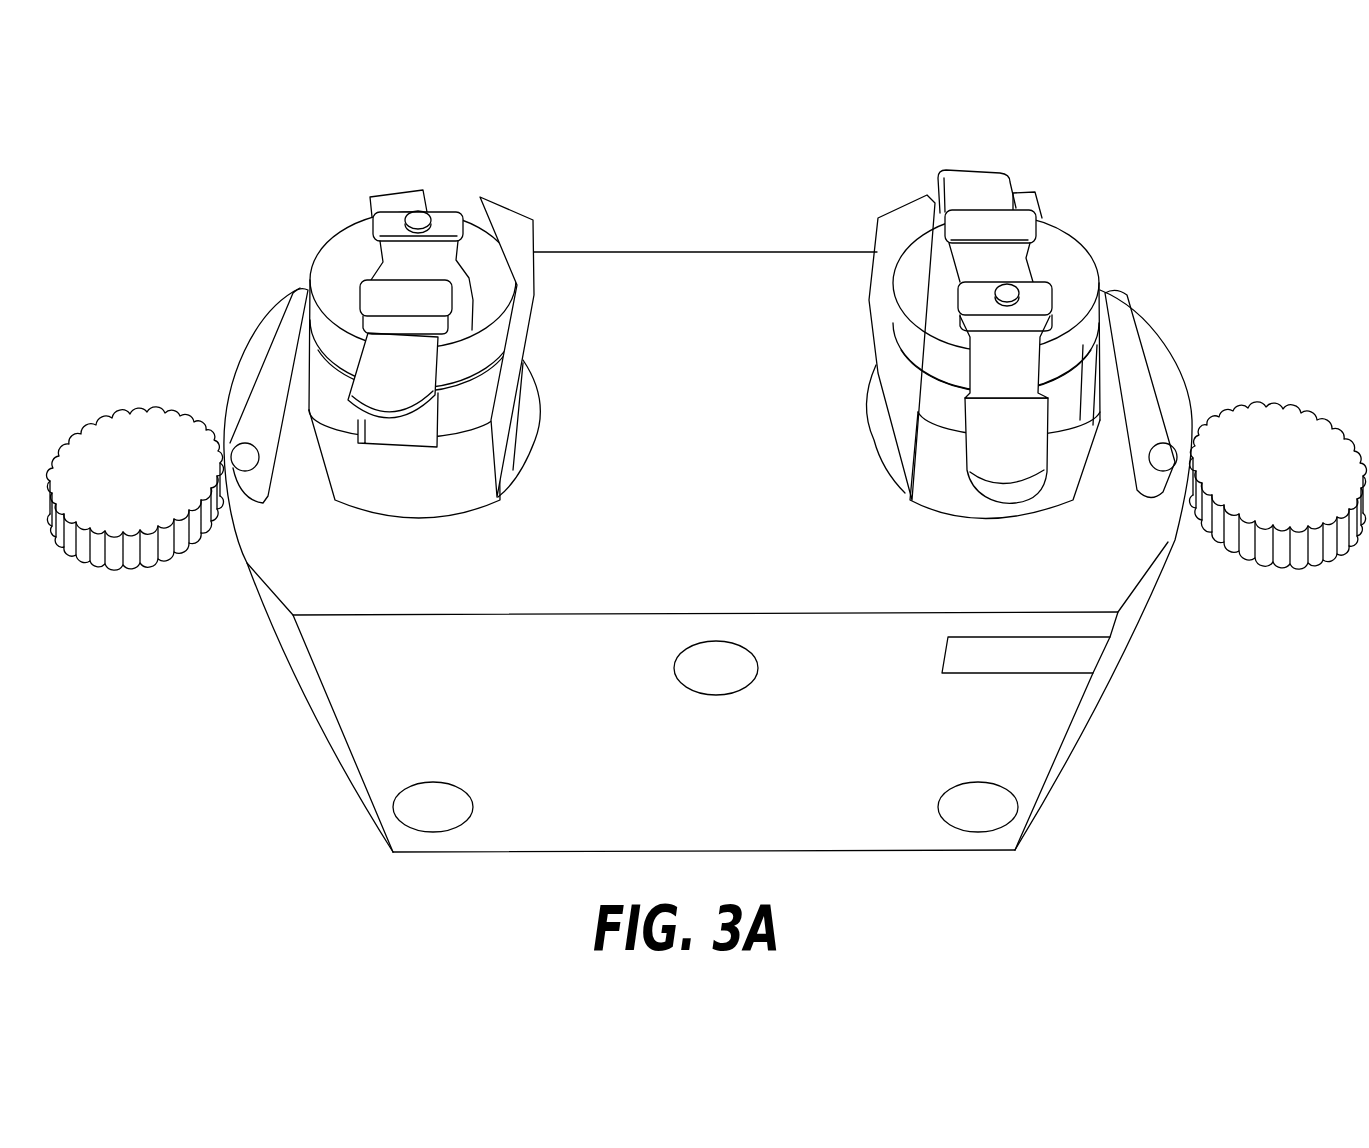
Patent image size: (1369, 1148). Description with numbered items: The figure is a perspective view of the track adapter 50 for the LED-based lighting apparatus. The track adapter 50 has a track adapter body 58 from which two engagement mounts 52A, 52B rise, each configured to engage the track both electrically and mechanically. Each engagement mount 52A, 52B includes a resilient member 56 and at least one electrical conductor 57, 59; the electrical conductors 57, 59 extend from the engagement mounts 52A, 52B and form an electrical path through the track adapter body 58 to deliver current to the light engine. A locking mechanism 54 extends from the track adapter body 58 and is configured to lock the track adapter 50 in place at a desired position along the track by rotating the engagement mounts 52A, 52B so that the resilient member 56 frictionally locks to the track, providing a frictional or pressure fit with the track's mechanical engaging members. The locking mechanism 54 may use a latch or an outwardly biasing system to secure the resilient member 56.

The track adapter 50 is at (706, 165).
The engagement mount 52A is at (461, 145).
The engagement mount 52B is at (988, 142).
The locking mechanism 54 is at (180, 420).
The resilient member 56 is at (523, 443).
The electrical conductor 57 is at (965, 182).
The track adapter body 58 is at (882, 852).
The electrical conductor 59 is at (388, 424).